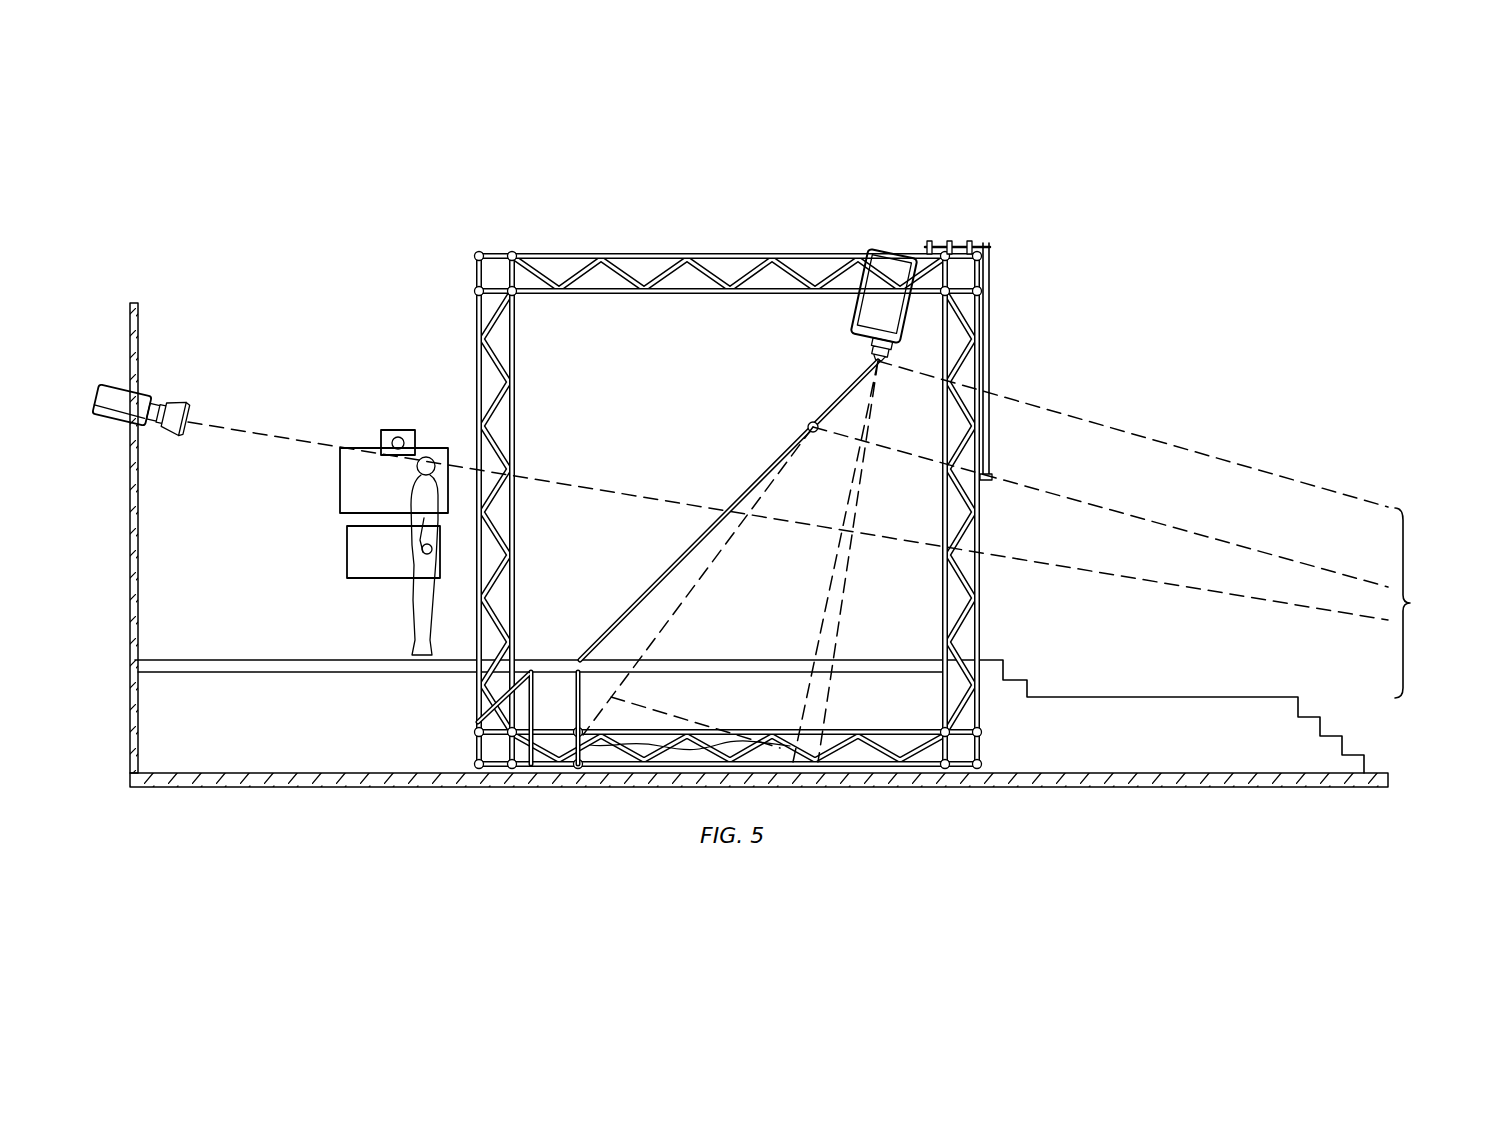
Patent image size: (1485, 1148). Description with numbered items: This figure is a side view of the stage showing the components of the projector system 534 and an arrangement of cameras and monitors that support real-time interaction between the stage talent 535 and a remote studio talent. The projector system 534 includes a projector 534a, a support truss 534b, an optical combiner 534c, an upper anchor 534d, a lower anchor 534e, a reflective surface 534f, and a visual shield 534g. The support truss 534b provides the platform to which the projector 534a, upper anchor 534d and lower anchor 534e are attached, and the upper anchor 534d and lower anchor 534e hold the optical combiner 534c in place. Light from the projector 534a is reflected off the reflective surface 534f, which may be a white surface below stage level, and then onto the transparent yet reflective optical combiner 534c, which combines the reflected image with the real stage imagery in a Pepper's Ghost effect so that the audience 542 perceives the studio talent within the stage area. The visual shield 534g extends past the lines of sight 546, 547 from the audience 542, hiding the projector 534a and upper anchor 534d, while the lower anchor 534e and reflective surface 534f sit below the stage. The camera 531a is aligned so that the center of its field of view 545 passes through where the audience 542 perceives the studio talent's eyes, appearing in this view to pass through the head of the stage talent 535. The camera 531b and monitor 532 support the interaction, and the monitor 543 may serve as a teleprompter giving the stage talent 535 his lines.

The projector system 534 is at (774, 497).
The projector 534a is at (896, 250).
The support truss 534b is at (565, 257).
The optical combiner 534c is at (748, 491).
The upper anchor 534d is at (834, 404).
The lower anchor 534e is at (546, 690).
The reflective surface 534f is at (617, 770).
The visual shield 534g is at (992, 306).
The camera 531a is at (153, 400).
The camera 531b is at (387, 430).
The monitor 532 is at (340, 486).
The monitor 543 is at (347, 560).
The stage talent 535 is at (442, 450).
The field of view 545 is at (256, 432).
The line of sight 546 is at (1160, 442).
The line of sight 547 is at (1162, 524).
The audience 542 is at (1427, 603).